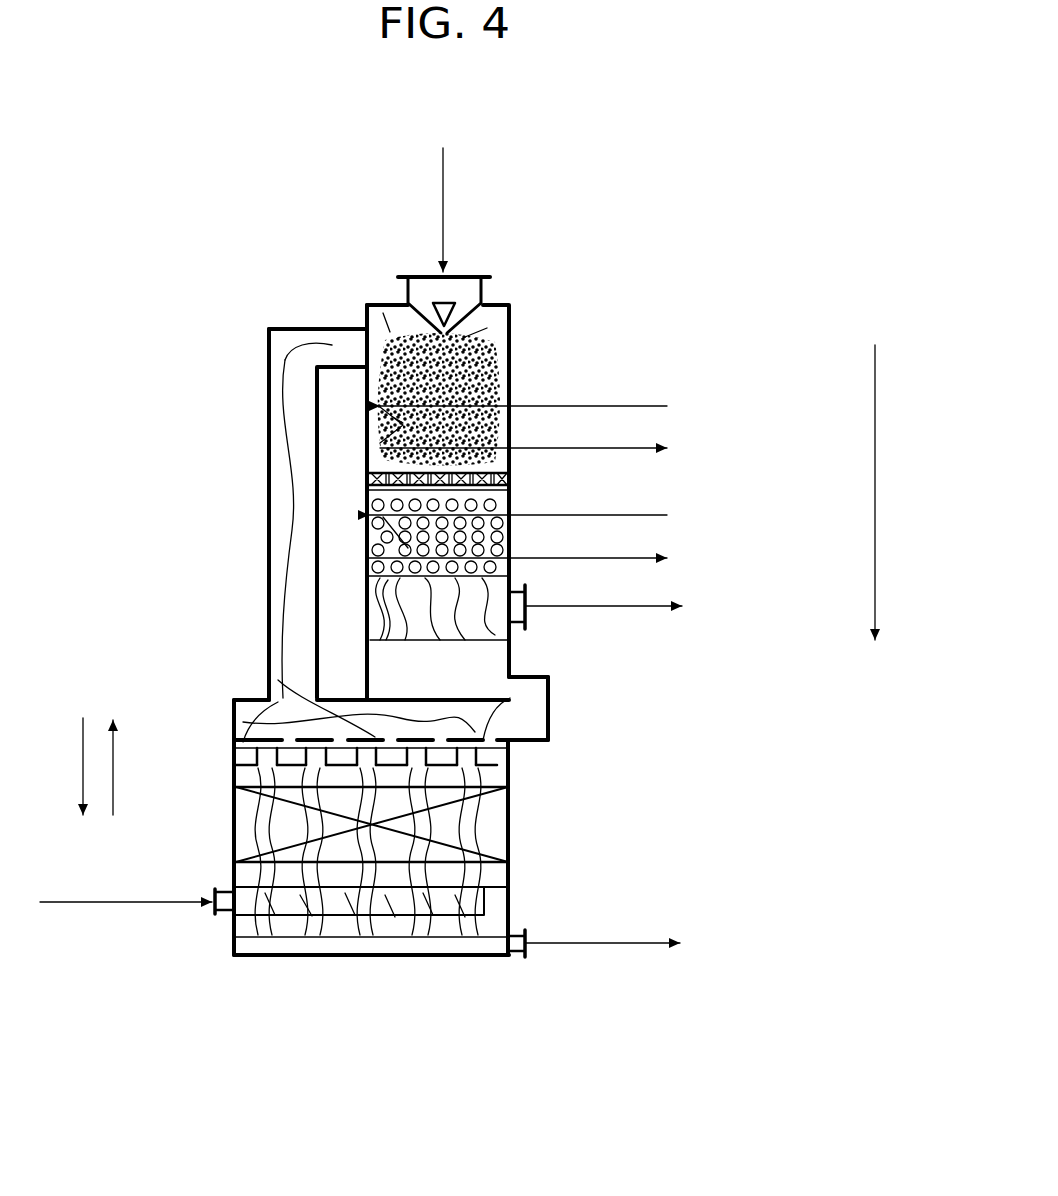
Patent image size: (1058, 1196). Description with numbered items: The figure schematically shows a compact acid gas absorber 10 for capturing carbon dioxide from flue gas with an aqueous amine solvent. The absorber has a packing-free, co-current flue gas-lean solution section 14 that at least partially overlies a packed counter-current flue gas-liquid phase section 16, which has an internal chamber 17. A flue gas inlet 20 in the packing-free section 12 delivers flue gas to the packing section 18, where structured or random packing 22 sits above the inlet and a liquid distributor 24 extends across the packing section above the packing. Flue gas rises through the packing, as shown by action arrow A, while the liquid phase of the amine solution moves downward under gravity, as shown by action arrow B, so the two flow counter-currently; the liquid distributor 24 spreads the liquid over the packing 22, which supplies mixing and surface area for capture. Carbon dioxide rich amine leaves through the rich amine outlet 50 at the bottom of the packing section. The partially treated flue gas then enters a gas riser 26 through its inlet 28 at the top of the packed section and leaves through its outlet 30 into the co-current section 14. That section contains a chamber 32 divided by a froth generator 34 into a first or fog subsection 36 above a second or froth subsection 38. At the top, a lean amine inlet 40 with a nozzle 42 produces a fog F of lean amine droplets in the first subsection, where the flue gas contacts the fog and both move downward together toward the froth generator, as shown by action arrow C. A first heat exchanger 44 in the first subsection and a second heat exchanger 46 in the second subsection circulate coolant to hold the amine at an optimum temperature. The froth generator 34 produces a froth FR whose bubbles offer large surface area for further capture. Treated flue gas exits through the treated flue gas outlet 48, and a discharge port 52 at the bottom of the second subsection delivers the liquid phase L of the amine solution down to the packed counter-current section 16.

The acid gas absorber 10 is at (476, 602).
The packing-free section 12 is at (274, 953).
The co-current flue gas-lean solution section 14 is at (528, 288).
The packed counter-current flue gas-liquid phase section 16 is at (379, 841).
The internal chamber 17 is at (240, 712).
The packing section 18 is at (378, 852).
The flue gas inlet 20 is at (220, 912).
The structured or random packing 22 is at (508, 810).
The liquid distributor 24 is at (511, 758).
The gas riser 26 is at (268, 495).
The inlet 28 is at (265, 692).
The outlet 30 is at (367, 352).
The chamber 32 is at (608, 451).
The froth generator 34 is at (500, 472).
The first or fog subsection 36 is at (613, 385).
The second or froth subsection 38 is at (608, 540).
The lean amine inlet 40 is at (517, 239).
The nozzle 42 is at (435, 298).
The first heat exchanger 44 is at (480, 392).
The second heat exchanger 46 is at (502, 565).
The treated flue gas outlet 48 is at (523, 617).
The rich amine outlet 50 is at (518, 957).
The discharge port 52 is at (520, 690).
The fog F is at (485, 355).
The froth FR is at (508, 535).
The liquid phase L is at (483, 655).
The action arrow A is at (113, 762).
The action arrow B is at (82, 767).
The action arrow C is at (877, 497).